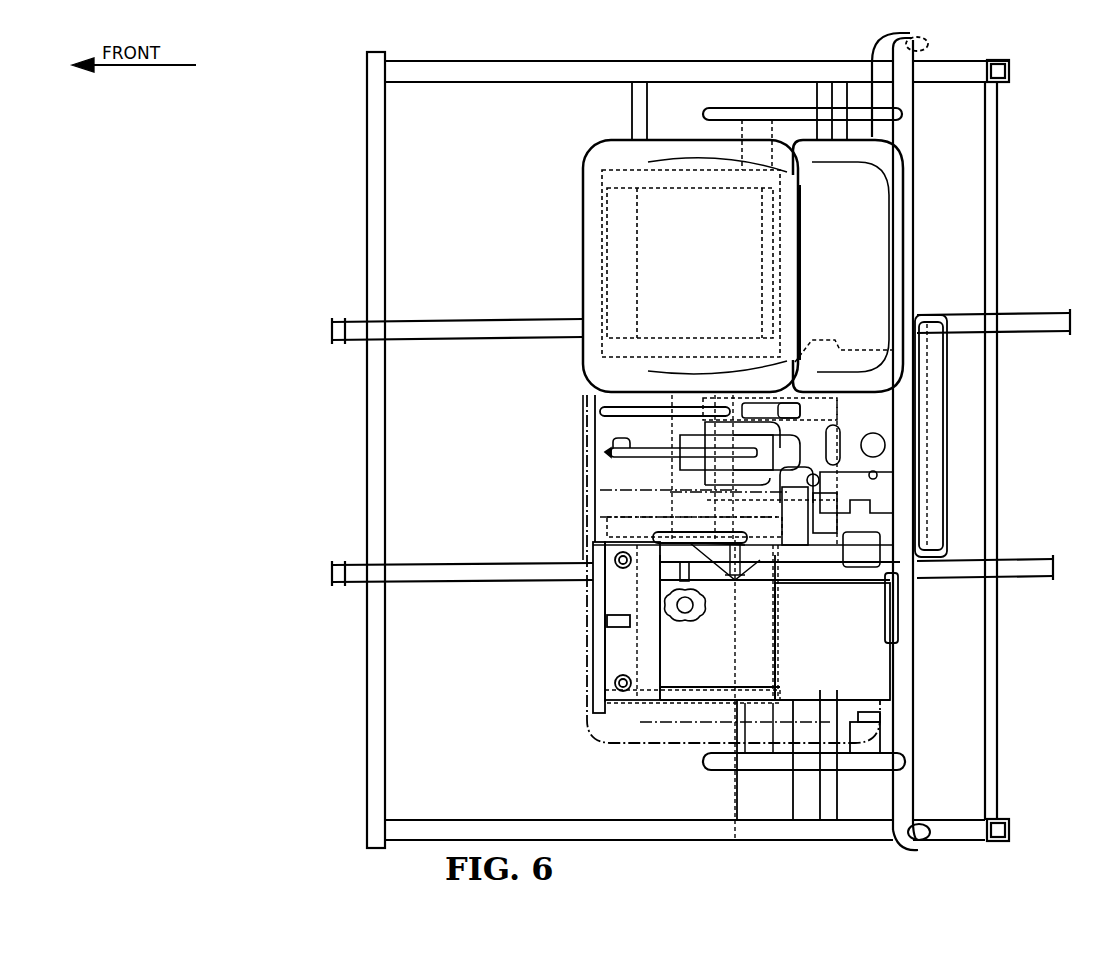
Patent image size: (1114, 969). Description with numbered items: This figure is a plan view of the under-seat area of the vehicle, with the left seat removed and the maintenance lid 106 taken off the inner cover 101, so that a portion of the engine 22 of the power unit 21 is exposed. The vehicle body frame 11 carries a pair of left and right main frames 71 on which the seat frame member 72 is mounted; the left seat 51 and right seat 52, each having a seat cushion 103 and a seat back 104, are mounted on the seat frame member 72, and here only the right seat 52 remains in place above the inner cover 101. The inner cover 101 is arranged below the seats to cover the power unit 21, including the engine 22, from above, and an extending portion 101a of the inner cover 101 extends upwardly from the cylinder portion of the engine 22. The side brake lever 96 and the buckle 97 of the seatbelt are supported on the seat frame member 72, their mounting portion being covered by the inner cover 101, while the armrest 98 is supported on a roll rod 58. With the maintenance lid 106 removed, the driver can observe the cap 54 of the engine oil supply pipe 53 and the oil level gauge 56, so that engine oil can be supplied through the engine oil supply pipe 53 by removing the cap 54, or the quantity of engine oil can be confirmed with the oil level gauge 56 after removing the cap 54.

The vehicle body frame 11 is at (366, 468).
The power unit 21 is at (668, 427).
The engine 22 is at (703, 430).
The left seat 51 is at (676, 750).
The right seat 52 is at (602, 140).
The engine oil supply pipe 53 is at (650, 537).
The cap 54 is at (668, 605).
The oil level gauge 56 is at (735, 840).
The roll rod 58 is at (885, 38).
The main frame 71 is at (345, 322).
The seat frame member 72 is at (604, 214).
The side brake lever 96 is at (609, 453).
The buckle 97 is at (777, 408).
The armrest 98 is at (760, 113).
The inner cover 101 is at (633, 480).
The extending portion 101a is at (880, 440).
The seat cushion 103 is at (600, 268).
The seat back 104 is at (870, 245).
The maintenance lid 106 is at (655, 650).